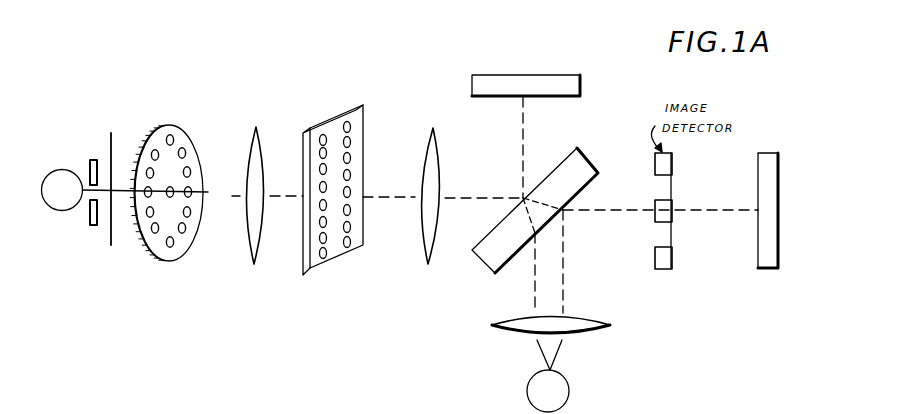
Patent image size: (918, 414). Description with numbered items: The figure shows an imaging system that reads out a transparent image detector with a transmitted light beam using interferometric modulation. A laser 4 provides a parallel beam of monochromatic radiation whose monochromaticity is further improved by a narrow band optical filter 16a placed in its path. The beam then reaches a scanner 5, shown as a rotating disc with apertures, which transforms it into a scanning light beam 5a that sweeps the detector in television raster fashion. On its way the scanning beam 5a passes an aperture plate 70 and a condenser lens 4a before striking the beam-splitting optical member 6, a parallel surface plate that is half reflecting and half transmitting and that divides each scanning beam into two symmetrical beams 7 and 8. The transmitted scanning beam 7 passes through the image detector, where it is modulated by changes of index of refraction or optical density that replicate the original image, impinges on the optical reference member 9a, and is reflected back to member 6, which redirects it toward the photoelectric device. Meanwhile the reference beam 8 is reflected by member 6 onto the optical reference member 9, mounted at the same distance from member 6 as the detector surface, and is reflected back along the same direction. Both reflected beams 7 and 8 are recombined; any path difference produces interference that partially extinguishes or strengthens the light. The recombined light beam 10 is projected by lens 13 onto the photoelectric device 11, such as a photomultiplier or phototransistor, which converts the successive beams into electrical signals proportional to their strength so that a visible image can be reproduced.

The laser 4 is at (58, 209).
The narrow band optical filter 16a is at (113, 141).
The scanner 5 is at (165, 262).
The scanning light beam 5a is at (230, 195).
The aperture plate 70 is at (317, 263).
The condenser lens 4a is at (430, 257).
The optical reference member 9 is at (580, 93).
The reference beam 8 is at (521, 155).
The beam-splitting optical member 6 is at (576, 148).
The transmitted scanning beam 7 is at (601, 212).
The lens 13 is at (610, 327).
The recombined light beam 10 is at (562, 352).
The photoelectric device 11 is at (567, 390).
The optical reference member 9a is at (763, 257).